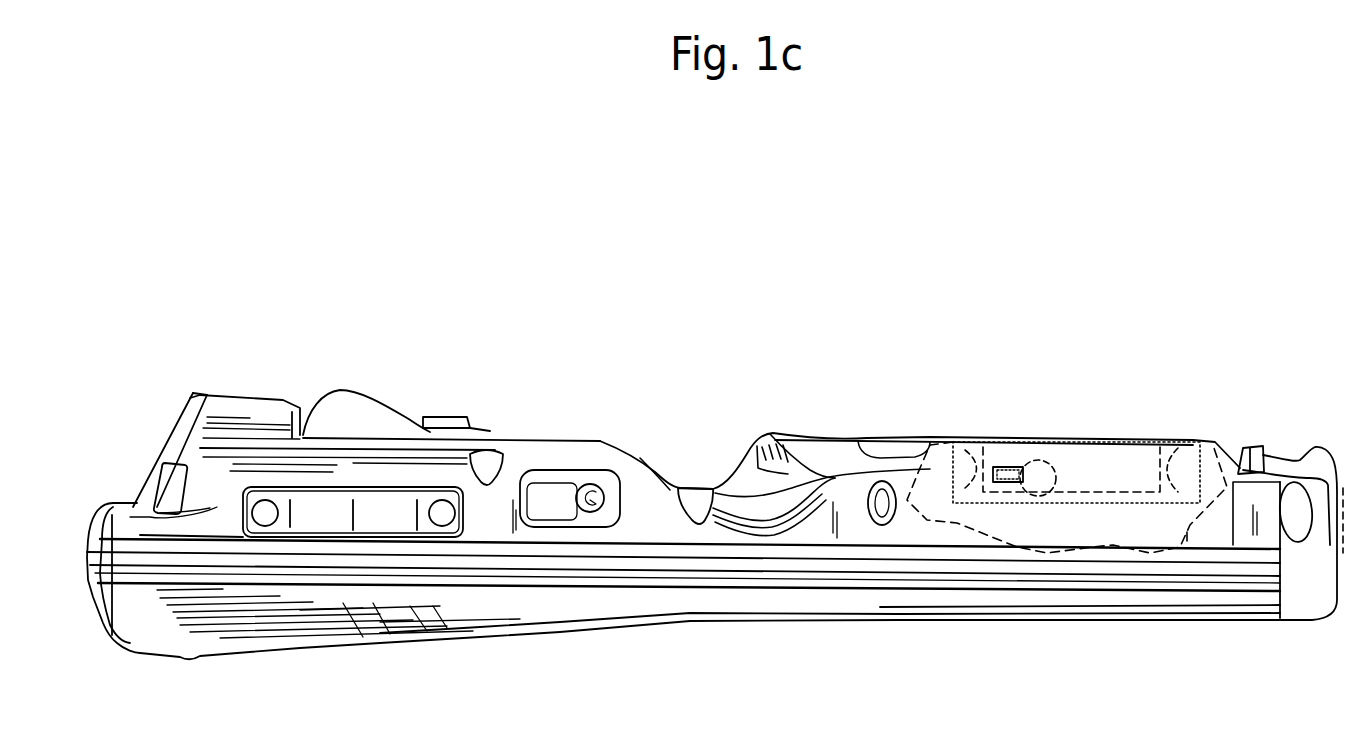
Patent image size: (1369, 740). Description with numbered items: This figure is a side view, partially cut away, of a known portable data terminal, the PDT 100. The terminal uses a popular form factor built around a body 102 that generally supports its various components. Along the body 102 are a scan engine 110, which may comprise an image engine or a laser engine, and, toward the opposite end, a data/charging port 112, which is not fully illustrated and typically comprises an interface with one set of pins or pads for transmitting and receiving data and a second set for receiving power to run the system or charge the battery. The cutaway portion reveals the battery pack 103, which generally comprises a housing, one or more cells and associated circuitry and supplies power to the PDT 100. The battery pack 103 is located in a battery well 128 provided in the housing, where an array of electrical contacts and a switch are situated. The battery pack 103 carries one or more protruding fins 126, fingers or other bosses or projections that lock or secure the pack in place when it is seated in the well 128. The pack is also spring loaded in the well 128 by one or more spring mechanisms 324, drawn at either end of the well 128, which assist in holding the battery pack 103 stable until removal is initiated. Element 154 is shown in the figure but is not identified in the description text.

The PDT 100 is at (782, 258).
The body 102 is at (600, 433).
The battery pack 103 is at (1087, 493).
The scan engine 110 is at (170, 473).
The data/charging port 112 is at (1344, 513).
The protruding fin 126 is at (1010, 467).
The battery well 128 is at (1117, 500).
The lens 154 is at (1042, 460).
The spring mechanism 324 is at (980, 450).